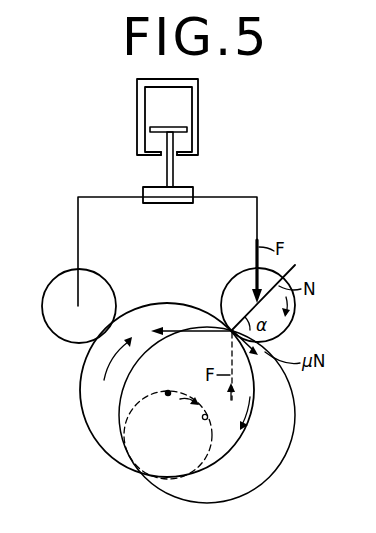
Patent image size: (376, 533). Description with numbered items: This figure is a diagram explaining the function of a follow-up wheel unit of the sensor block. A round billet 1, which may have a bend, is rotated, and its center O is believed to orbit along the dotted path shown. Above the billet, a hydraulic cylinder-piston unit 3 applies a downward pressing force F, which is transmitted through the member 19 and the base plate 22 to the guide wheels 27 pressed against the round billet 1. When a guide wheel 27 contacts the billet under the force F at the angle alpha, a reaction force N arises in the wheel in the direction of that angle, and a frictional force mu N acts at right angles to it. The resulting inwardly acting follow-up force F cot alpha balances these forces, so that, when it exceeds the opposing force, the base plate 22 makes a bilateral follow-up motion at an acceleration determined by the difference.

The round billet 1 is at (100, 447).
The hydraulic cylinder-piston unit 3 is at (198, 132).
The block 19 is at (193, 190).
The base plate 22 is at (240, 190).
The roller 27 is at (45, 319).